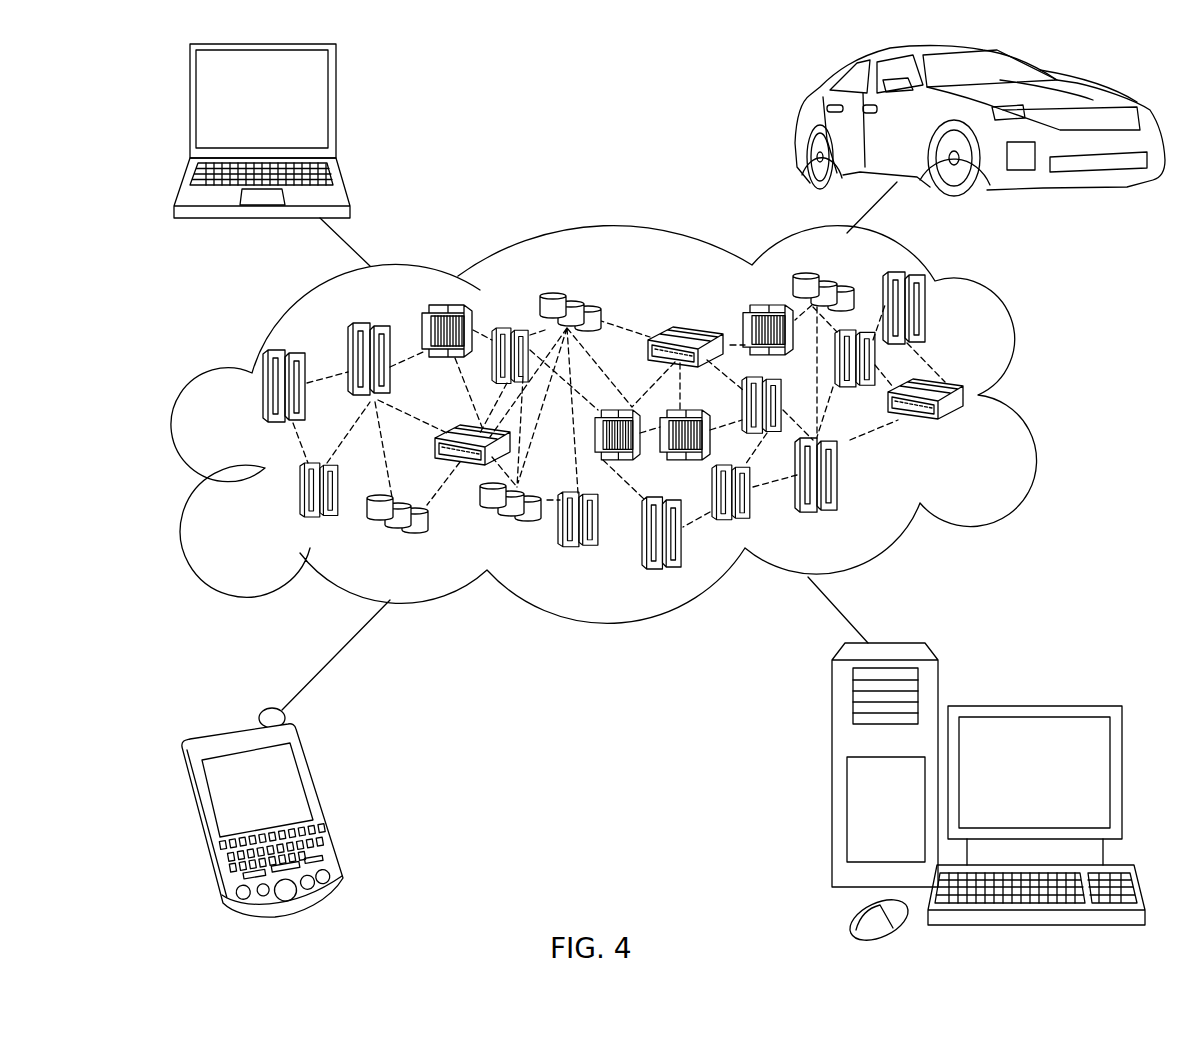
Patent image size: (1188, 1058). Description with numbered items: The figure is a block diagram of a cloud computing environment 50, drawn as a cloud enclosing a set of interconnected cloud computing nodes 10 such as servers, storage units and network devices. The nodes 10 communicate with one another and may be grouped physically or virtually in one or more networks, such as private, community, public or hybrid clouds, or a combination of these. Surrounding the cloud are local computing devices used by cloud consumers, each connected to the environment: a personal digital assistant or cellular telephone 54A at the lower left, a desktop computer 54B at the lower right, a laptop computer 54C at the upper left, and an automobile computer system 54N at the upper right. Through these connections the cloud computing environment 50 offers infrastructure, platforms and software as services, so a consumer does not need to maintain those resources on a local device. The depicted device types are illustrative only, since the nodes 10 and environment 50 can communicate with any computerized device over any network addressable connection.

The cloud computing nodes 10 is at (983, 434).
The cloud computing environment 50 is at (1035, 396).
The personal digital assistant (PDA) or cellular telephone 54A is at (323, 802).
The desktop computer 54B is at (1032, 705).
The laptop computer 54C is at (336, 108).
The automobile computer system 54N is at (800, 125).